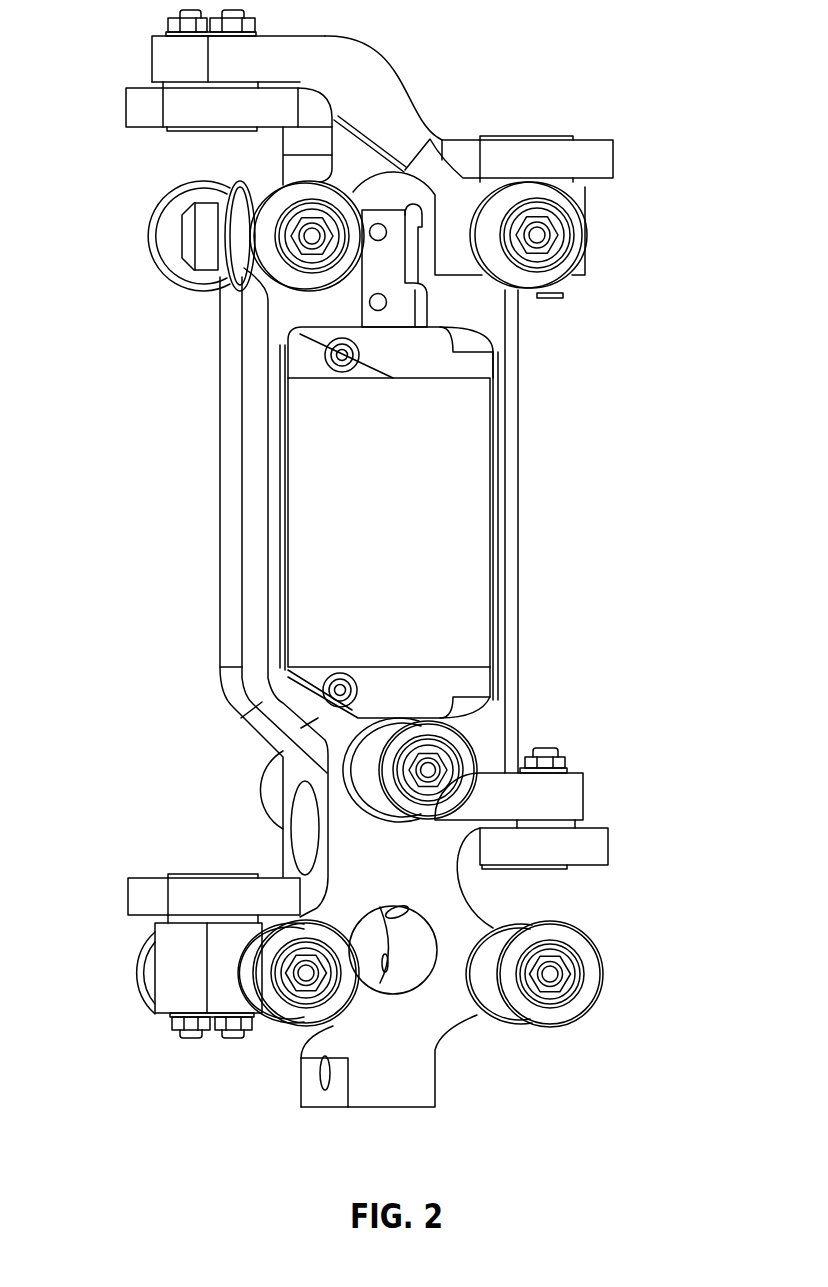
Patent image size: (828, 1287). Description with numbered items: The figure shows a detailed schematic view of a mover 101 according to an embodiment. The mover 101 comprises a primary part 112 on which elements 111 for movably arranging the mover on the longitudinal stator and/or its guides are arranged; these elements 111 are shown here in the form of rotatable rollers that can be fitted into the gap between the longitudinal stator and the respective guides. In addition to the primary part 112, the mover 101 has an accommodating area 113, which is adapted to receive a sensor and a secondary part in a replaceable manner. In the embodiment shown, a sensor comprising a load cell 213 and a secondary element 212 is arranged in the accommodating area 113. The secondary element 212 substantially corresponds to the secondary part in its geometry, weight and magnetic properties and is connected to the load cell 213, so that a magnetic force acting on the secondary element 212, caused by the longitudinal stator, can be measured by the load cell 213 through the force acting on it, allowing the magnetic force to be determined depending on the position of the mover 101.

The mover 101 is at (132, 381).
The elements for movably arranging the mover 111 is at (605, 160).
The primary part 112 is at (427, 1085).
The accommodating area 113 is at (216, 538).
The secondary element 212 is at (470, 517).
The load cell 213 is at (398, 353).